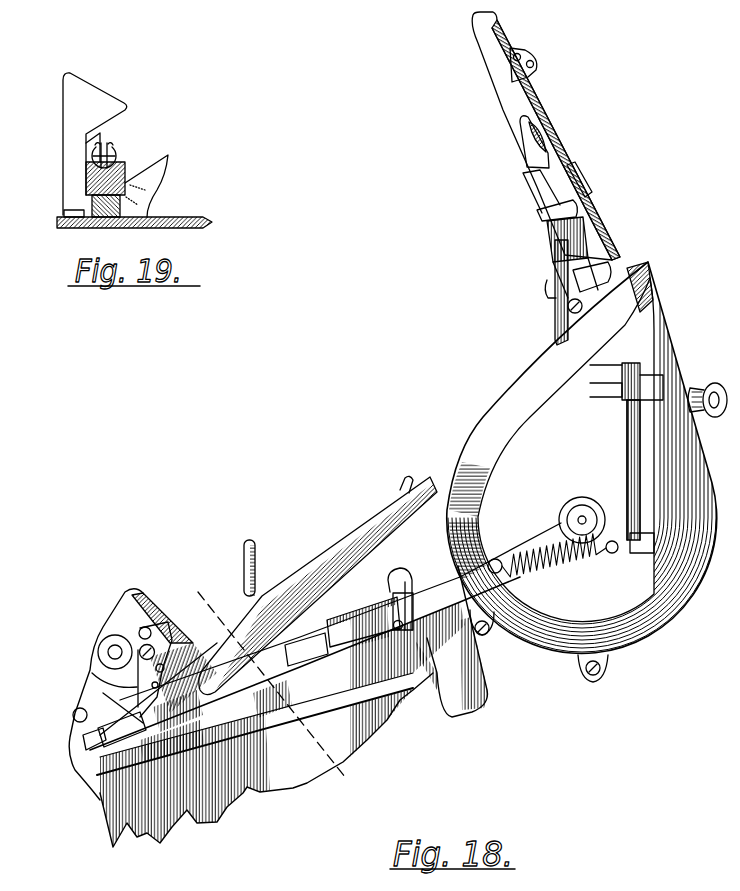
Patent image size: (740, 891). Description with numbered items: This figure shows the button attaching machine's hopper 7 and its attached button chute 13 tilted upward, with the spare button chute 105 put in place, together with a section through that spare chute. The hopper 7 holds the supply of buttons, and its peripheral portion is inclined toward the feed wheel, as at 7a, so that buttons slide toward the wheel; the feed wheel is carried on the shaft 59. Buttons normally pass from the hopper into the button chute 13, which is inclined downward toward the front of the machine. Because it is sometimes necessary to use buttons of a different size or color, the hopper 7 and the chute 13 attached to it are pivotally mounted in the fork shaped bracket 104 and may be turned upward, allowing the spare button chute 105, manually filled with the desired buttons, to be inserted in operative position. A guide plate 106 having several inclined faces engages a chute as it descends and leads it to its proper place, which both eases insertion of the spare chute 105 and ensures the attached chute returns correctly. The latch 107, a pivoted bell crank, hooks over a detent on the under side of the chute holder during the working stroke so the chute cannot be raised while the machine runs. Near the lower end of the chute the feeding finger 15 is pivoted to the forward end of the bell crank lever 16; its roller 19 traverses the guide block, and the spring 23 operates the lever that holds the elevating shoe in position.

In FIG. 18, the button chute 13 is at (557, 150).
In FIG. 18, the hopper 7 is at (537, 425).
In FIG. 18, the inclined peripheral portion of the hopper 7a is at (490, 440).
In FIG. 18, the shaft 59 is at (582, 516).
In FIG. 18, the fork shaped bracket 104 is at (532, 540).
In FIG. 19, the spare button chute 105 is at (110, 153).
In FIG. 18, the spare button chute 105 is at (325, 556).
In FIG. 19, the guide plate 106 is at (72, 112).
In FIG. 18, the guide plate 106 is at (245, 552).
In FIG. 18, the latch 107 is at (408, 570).
In FIG. 18, the bell crank lever 16 is at (127, 607).
In FIG. 18, the roller 19 is at (275, 686).
In FIG. 18, the spring 23 is at (165, 630).
In FIG. 18, the finger 15 is at (93, 688).